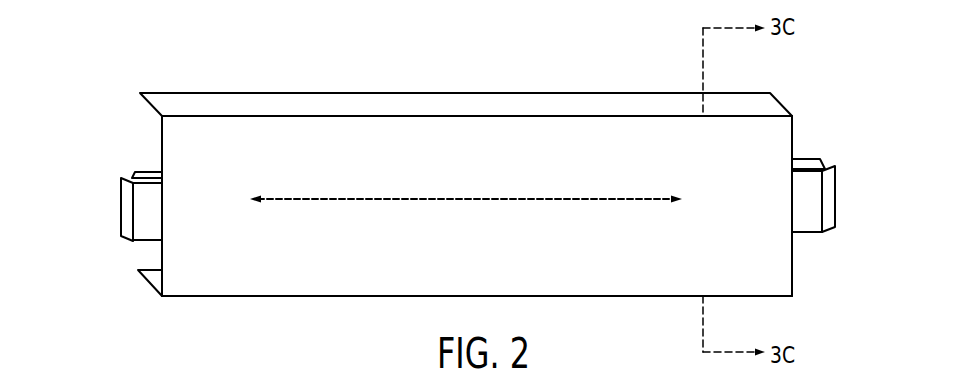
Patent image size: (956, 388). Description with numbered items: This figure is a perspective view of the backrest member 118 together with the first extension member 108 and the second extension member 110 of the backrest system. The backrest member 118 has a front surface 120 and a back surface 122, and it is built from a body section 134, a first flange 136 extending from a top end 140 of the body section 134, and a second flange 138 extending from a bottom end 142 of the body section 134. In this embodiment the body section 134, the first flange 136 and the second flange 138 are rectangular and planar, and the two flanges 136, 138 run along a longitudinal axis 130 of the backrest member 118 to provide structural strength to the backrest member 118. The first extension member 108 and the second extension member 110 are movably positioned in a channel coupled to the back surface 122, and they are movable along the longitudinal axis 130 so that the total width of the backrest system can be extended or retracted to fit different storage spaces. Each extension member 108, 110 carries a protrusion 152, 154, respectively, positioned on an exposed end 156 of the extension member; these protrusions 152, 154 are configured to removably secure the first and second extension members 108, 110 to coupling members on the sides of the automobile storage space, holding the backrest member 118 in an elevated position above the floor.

The first extension member 108 is at (815, 159).
The second extension member 110 is at (138, 170).
The backrest member 118 is at (502, 77).
The front surface 120 is at (557, 125).
The back surface 122 is at (793, 123).
The longitudinal axis 130 is at (368, 200).
The body section 134 is at (225, 123).
The first flange 136 is at (328, 93).
The second flange 138 is at (145, 277).
The top end 140 is at (392, 115).
The bottom end 142 is at (287, 297).
The protrusion 152 is at (835, 193).
The protrusion 154 is at (121, 210).
The exposed end 156 is at (109, 230).